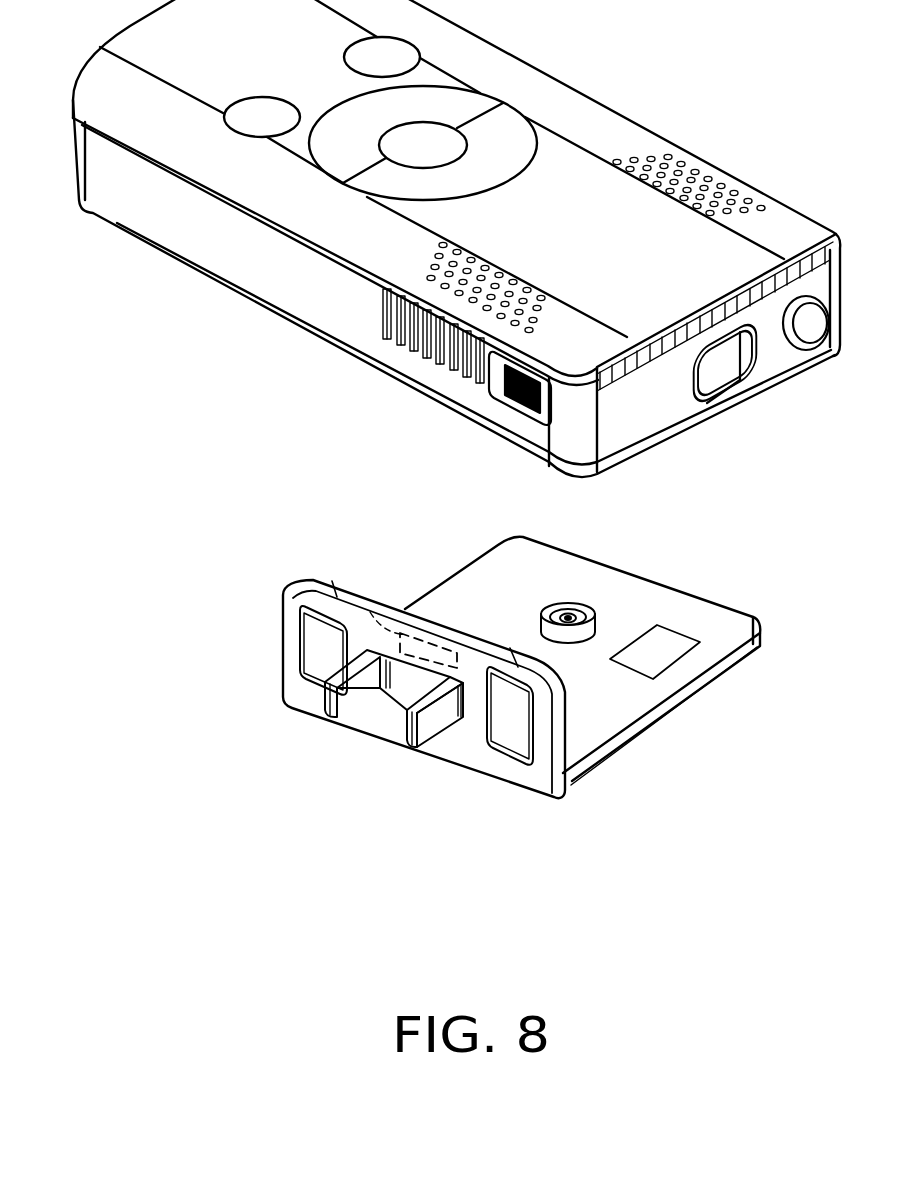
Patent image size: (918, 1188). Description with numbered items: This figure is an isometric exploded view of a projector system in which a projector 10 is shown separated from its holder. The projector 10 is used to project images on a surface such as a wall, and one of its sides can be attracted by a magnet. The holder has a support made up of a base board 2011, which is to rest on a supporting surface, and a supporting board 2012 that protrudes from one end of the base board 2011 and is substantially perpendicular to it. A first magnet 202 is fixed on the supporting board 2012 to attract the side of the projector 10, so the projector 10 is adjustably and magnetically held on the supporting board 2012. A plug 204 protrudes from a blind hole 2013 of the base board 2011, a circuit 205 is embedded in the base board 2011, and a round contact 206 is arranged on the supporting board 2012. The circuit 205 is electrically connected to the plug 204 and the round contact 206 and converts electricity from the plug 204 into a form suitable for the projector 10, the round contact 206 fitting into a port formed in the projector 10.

The projector 10 is at (593, 132).
The first magnet 202 is at (667, 647).
The plug 204 is at (433, 710).
The circuit 205 is at (370, 612).
The round contact 206 is at (586, 610).
The base board 2011 is at (543, 767).
The supporting board 2012 is at (617, 713).
The blind hole 2013 is at (413, 677).